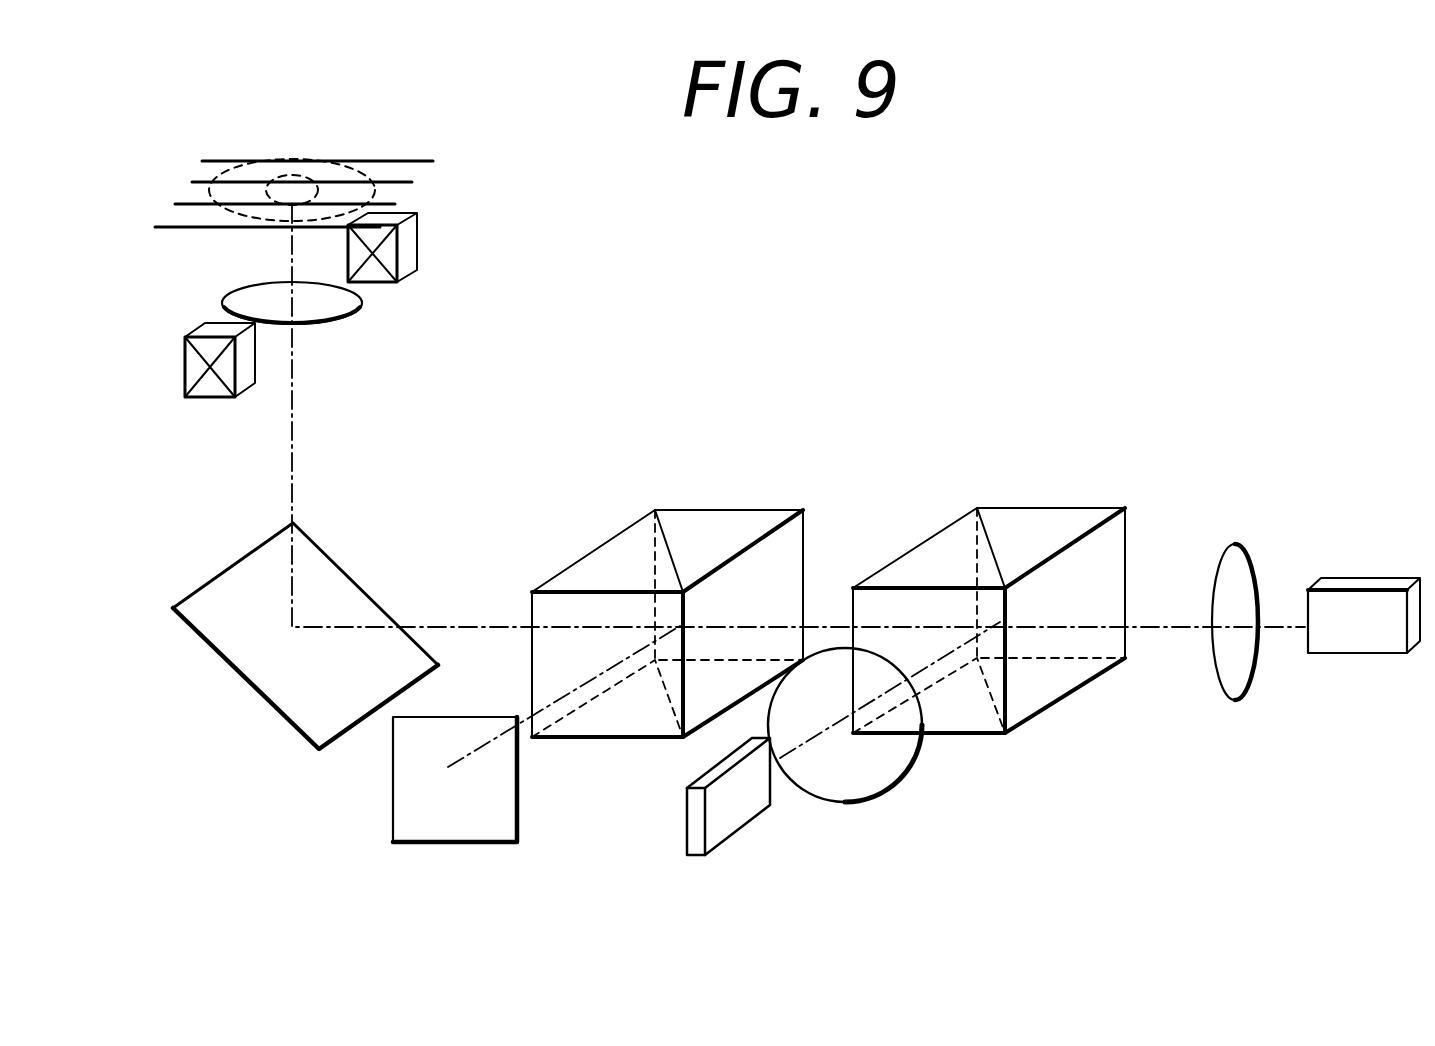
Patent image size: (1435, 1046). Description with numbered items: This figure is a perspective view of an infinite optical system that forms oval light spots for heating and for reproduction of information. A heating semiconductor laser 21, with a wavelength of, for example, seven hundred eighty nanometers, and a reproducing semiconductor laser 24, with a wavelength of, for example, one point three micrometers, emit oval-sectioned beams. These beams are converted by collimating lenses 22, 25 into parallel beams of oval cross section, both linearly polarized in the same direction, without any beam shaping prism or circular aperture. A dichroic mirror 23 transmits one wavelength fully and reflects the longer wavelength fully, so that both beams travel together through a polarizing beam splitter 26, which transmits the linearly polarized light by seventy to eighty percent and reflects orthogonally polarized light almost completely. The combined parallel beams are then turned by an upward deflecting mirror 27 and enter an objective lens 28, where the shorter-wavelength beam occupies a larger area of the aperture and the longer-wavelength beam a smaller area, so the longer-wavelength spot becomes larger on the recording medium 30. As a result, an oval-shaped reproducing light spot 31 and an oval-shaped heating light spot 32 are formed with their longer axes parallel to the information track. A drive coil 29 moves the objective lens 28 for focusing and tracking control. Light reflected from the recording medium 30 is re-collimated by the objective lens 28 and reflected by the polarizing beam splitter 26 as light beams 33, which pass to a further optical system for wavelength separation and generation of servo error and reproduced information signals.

The heating semiconductor laser 21 is at (748, 808).
The collimating lens 22 is at (885, 775).
The dichroic mirror 23 is at (1062, 527).
The reproducing semiconductor laser 24 is at (1352, 582).
The collimating lens 25 is at (1235, 545).
The polarizing beam splitter 26 is at (739, 530).
The upward deflecting mirror 27 is at (257, 663).
The objective lens 28 is at (355, 318).
The drive coil 29 is at (397, 275).
The recording medium 30 is at (400, 195).
The reproducing light spot 31 is at (288, 187).
The heating light spot 32 is at (345, 168).
The light beams 33 is at (487, 830).